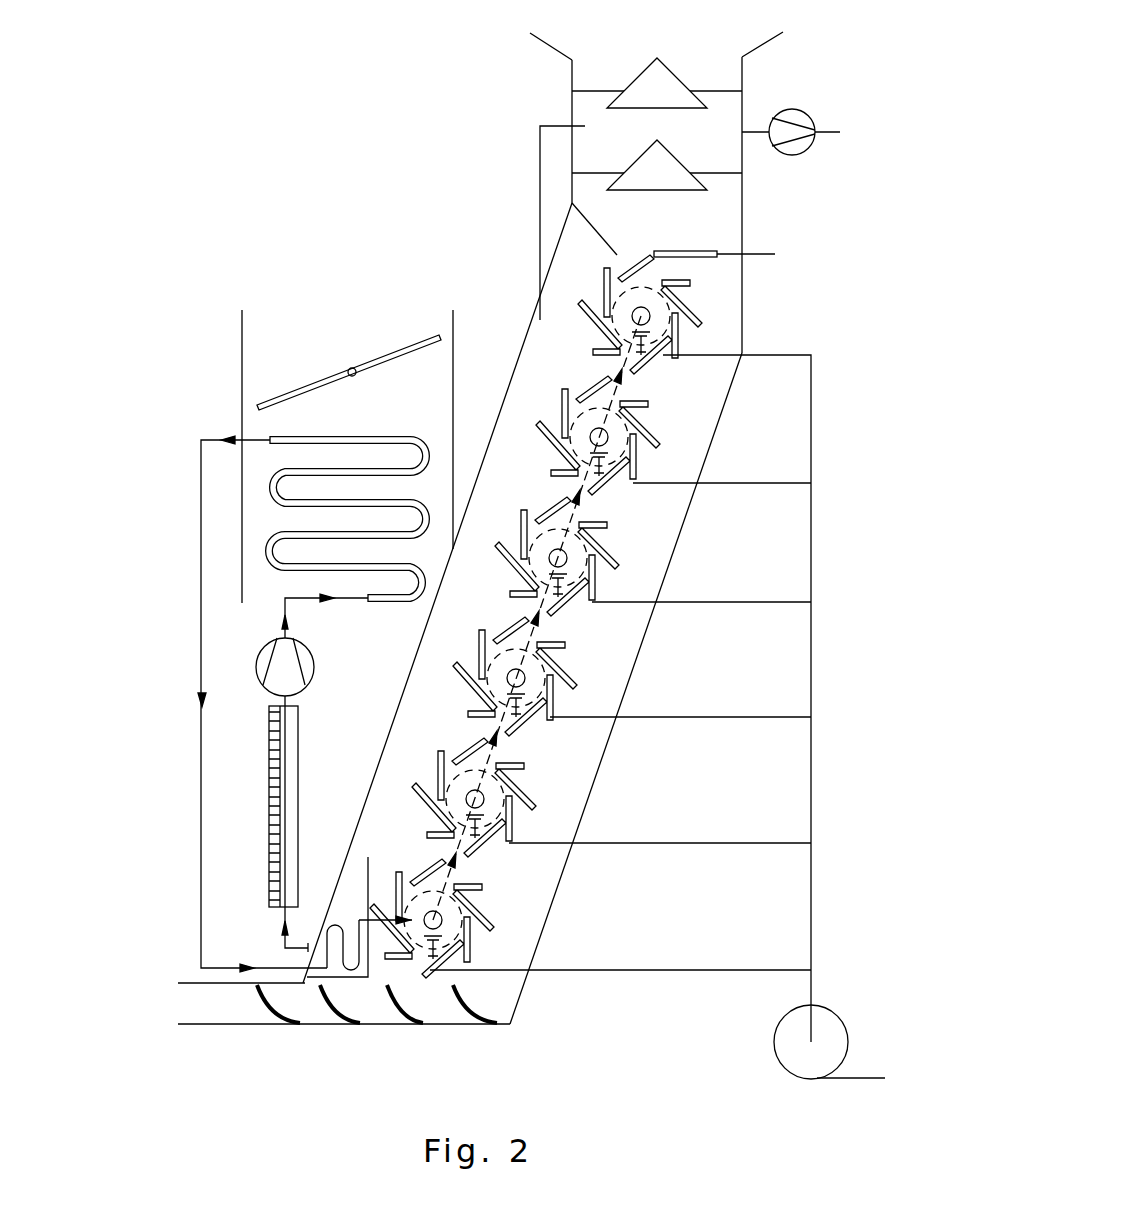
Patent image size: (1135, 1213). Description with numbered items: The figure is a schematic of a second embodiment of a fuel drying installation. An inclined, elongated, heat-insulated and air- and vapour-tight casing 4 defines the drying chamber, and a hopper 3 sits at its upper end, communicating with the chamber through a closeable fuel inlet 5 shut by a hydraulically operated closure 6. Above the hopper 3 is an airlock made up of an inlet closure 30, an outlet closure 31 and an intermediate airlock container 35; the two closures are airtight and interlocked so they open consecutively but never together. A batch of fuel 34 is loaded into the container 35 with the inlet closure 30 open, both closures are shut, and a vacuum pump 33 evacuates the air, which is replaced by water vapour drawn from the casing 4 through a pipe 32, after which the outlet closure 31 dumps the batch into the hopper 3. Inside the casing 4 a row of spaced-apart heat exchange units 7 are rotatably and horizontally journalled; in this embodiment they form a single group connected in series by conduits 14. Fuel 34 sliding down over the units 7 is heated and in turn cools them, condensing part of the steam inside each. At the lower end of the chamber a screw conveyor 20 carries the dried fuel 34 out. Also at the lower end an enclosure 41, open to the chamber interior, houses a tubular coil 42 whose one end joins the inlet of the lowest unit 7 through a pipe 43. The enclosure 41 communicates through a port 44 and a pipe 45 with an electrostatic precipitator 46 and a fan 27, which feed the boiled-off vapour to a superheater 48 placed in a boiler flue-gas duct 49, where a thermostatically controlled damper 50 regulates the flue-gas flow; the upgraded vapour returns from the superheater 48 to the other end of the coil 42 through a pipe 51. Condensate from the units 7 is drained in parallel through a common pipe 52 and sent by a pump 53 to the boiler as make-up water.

The hopper 3 is at (744, 196).
The casing 4 is at (727, 400).
The fuel inlet 5 is at (630, 257).
The closure 6 is at (695, 257).
The heat exchange unit 7 is at (687, 306).
The conduit 14 is at (575, 513).
The screw conveyor 20 is at (380, 1013).
The fan 27 is at (308, 665).
The inlet closure 30 is at (657, 72).
The outlet closure 31 is at (668, 162).
The pipe 32 is at (540, 154).
The vacuum pump 33 is at (797, 122).
The fuel 34 is at (588, 62).
The airlock container 35 is at (728, 112).
The enclosure 41 is at (357, 915).
The tubular coil 42 is at (330, 936).
The pipe 43 is at (372, 919).
The port 44 is at (315, 953).
The pipe 45 is at (283, 921).
The electrostatic precipitator 46 is at (292, 768).
The superheater 48 is at (342, 440).
The duct 49 is at (428, 393).
The damper 50 is at (308, 383).
The pipe 51 is at (201, 618).
The common pipe 52 is at (812, 638).
The pump 53 is at (787, 1047).